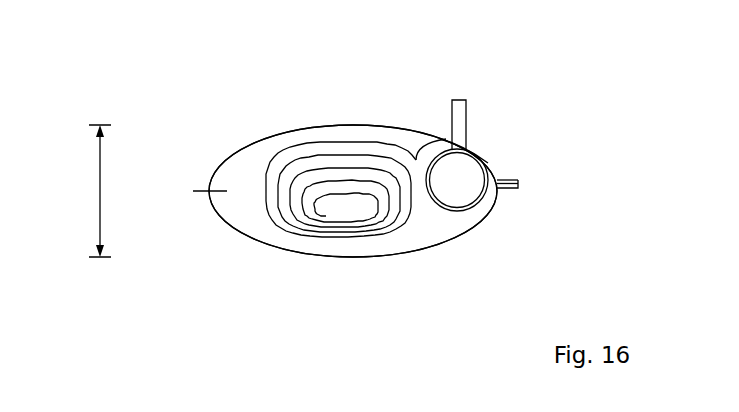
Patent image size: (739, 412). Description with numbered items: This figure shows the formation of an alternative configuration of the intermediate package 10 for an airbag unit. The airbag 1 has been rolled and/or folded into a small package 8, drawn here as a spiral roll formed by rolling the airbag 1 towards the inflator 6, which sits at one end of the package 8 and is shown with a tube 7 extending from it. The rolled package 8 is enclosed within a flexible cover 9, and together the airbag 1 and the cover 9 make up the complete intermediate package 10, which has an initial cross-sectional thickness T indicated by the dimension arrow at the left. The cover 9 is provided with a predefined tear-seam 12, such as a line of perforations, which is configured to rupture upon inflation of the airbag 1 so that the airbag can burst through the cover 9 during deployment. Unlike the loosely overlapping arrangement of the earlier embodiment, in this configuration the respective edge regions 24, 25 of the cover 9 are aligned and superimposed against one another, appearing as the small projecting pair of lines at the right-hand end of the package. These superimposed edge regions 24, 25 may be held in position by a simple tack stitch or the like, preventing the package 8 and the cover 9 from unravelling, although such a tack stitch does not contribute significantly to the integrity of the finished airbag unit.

The airbag 1 is at (411, 214).
The inflator 6 is at (460, 188).
The tube 7 is at (466, 126).
The package 8 is at (240, 210).
The flexible cover 9 is at (432, 130).
The intermediate package 10 is at (330, 112).
The tear-seam 12 is at (199, 180).
The edge region 24 is at (519, 180).
The edge region 25 is at (519, 188).
The initial cross-sectional thickness T is at (98, 198).